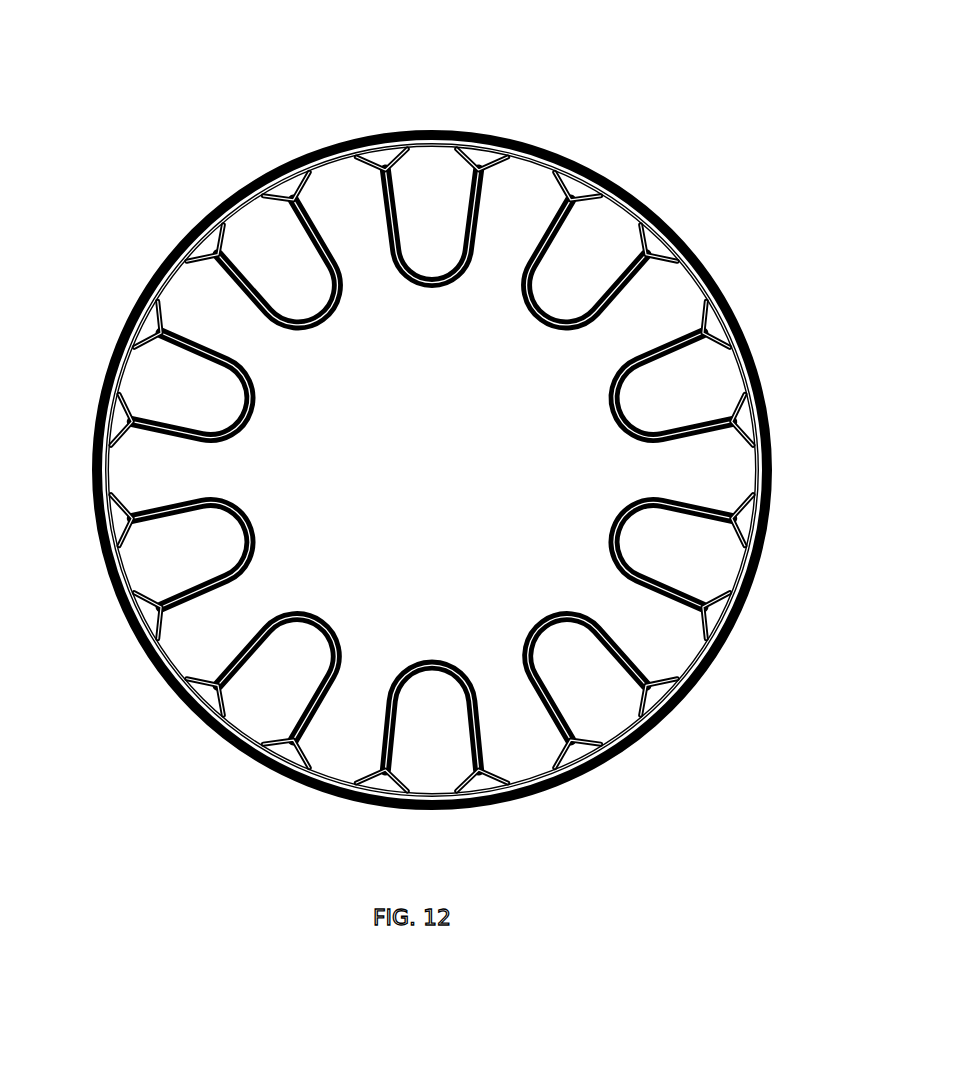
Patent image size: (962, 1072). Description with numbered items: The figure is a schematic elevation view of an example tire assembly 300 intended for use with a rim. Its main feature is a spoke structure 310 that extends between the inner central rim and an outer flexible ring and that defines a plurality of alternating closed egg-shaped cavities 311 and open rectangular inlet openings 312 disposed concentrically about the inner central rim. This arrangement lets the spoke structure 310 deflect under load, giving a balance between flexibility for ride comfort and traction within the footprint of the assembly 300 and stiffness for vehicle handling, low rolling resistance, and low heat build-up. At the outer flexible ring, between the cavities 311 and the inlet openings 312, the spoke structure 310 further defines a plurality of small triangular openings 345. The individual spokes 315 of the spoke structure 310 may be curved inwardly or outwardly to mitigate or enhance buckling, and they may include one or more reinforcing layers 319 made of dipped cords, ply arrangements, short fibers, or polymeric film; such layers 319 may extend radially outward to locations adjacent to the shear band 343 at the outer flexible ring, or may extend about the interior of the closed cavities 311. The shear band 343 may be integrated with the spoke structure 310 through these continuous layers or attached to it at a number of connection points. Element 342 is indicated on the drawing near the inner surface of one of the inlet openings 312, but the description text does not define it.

The tire assembly 300 is at (623, 86).
The spoke structure 310 is at (262, 392).
The closed egg-shaped cavities 311 is at (430, 175).
The open rectangular inlet openings 312 is at (522, 190).
The spokes 315 is at (604, 412).
The reinforcing layers 319 is at (408, 660).
The inner ring surface 342 is at (168, 303).
The shear band 343 is at (240, 186).
The triangular openings 345 is at (375, 157).